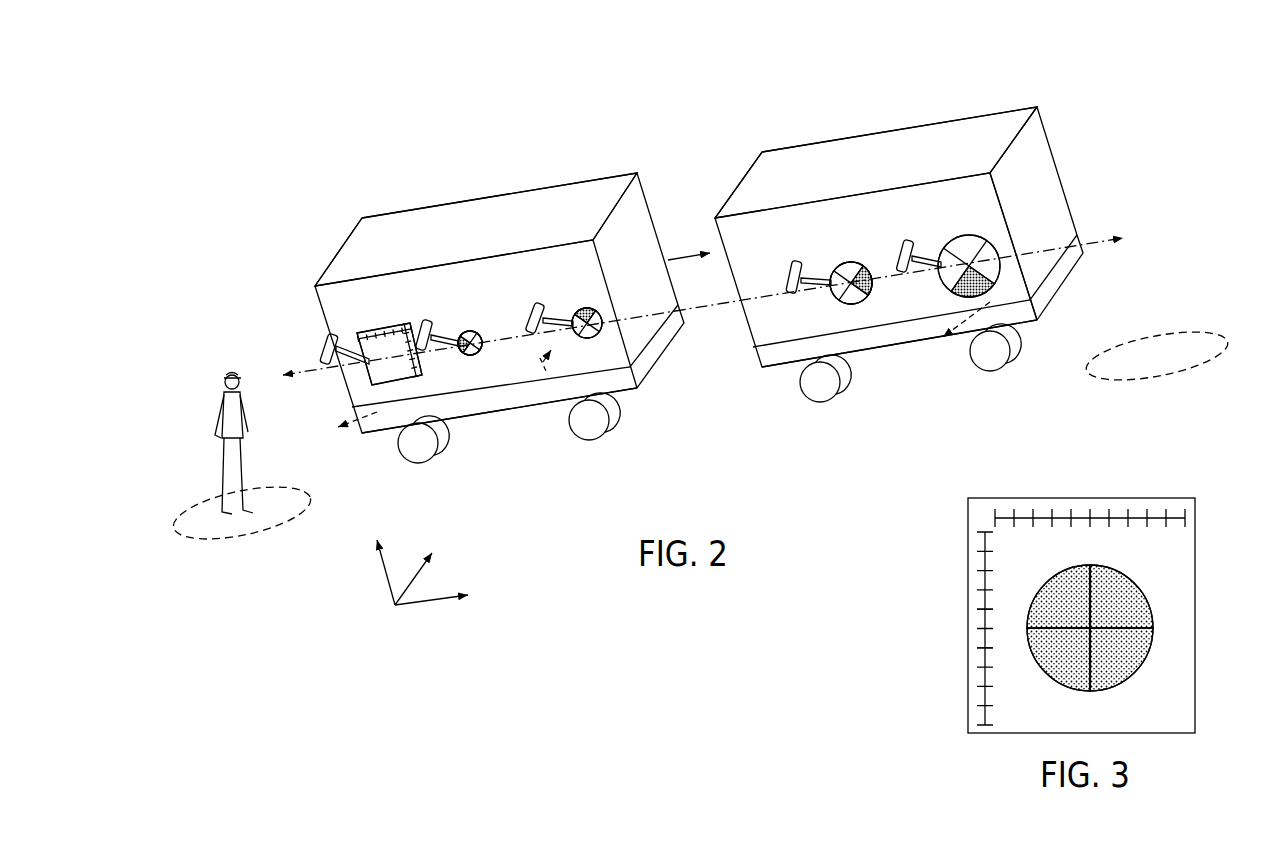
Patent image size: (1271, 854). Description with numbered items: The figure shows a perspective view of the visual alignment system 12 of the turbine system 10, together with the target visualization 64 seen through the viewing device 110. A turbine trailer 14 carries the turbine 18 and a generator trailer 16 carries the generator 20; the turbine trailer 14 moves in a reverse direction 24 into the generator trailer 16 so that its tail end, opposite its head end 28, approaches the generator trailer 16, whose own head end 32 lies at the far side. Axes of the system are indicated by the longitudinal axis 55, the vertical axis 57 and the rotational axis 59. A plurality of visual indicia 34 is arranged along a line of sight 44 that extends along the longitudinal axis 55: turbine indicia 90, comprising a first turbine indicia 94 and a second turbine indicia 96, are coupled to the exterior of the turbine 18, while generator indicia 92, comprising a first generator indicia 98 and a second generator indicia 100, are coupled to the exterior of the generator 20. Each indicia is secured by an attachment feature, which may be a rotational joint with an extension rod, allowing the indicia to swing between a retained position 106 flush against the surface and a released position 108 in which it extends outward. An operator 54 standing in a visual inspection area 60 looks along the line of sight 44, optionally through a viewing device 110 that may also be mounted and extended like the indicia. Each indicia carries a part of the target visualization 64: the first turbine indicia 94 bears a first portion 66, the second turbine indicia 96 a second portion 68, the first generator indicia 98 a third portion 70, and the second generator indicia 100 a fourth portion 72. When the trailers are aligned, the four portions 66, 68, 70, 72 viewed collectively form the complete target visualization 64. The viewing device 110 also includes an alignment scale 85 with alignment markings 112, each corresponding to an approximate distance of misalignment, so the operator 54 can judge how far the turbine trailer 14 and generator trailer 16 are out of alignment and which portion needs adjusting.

In FIG. 2, the turbine system 10 is at (905, 400).
In FIG. 2, the visual alignment system 12 is at (540, 492).
In FIG. 2, the turbine trailer 14 is at (622, 388).
In FIG. 2, the generator trailer 16 is at (1020, 320).
In FIG. 2, the turbine 18 is at (507, 212).
In FIG. 2, the generator 20 is at (842, 148).
In FIG. 2, the reverse direction 24 is at (690, 252).
In FIG. 2, the head end of the turbine trailer 28 is at (293, 292).
In FIG. 2, the head end of the generator trailer 32 is at (1130, 172).
In FIG. 2, the plurality of visual indicia 34 is at (513, 307).
In FIG. 2, the line of sight 44 is at (318, 372).
In FIG. 2, the operator 54 is at (232, 368).
In FIG. 2, the longitudinal axis 55 is at (425, 598).
In FIG. 2, the vertical axis 57 is at (383, 575).
In FIG. 2, the rotational axis 59 is at (410, 580).
In FIG. 2, the visual inspection area 60 is at (250, 527).
In FIG. 3, the target visualization 64 is at (1165, 598).
In FIG. 2, the first portion of the target visualization 66 is at (480, 333).
In FIG. 3, the first portion of the target visualization 66 is at (1060, 590).
In FIG. 2, the second portion of the target visualization 68 is at (600, 310).
In FIG. 3, the second portion of the target visualization 68 is at (1120, 590).
In FIG. 2, the third portion of the target visualization 70 is at (866, 294).
In FIG. 3, the third portion of the target visualization 70 is at (1130, 663).
In FIG. 2, the fourth portion of the target visualization 72 is at (957, 292).
In FIG. 3, the fourth portion of the target visualization 72 is at (1057, 660).
In FIG. 3, the alignment scale 85 is at (1080, 513).
In FIG. 2, the turbine indicia 90 is at (482, 317).
In FIG. 2, the generator indicia 92 is at (832, 255).
In FIG. 2, the first turbine indicia 94 is at (478, 352).
In FIG. 2, the second turbine indicia 96 is at (597, 343).
In FIG. 2, the first generator indicia 98 is at (866, 305).
In FIG. 2, the second generator indicia 100 is at (1035, 300).
In FIG. 2, the retained position 106 is at (468, 368).
In FIG. 2, the released position 108 is at (562, 335).
In FIG. 2, the viewing device 110 is at (387, 325).
In FIG. 3, the viewing device 110 is at (1140, 497).
In FIG. 3, the alignment markings 112 is at (977, 648).